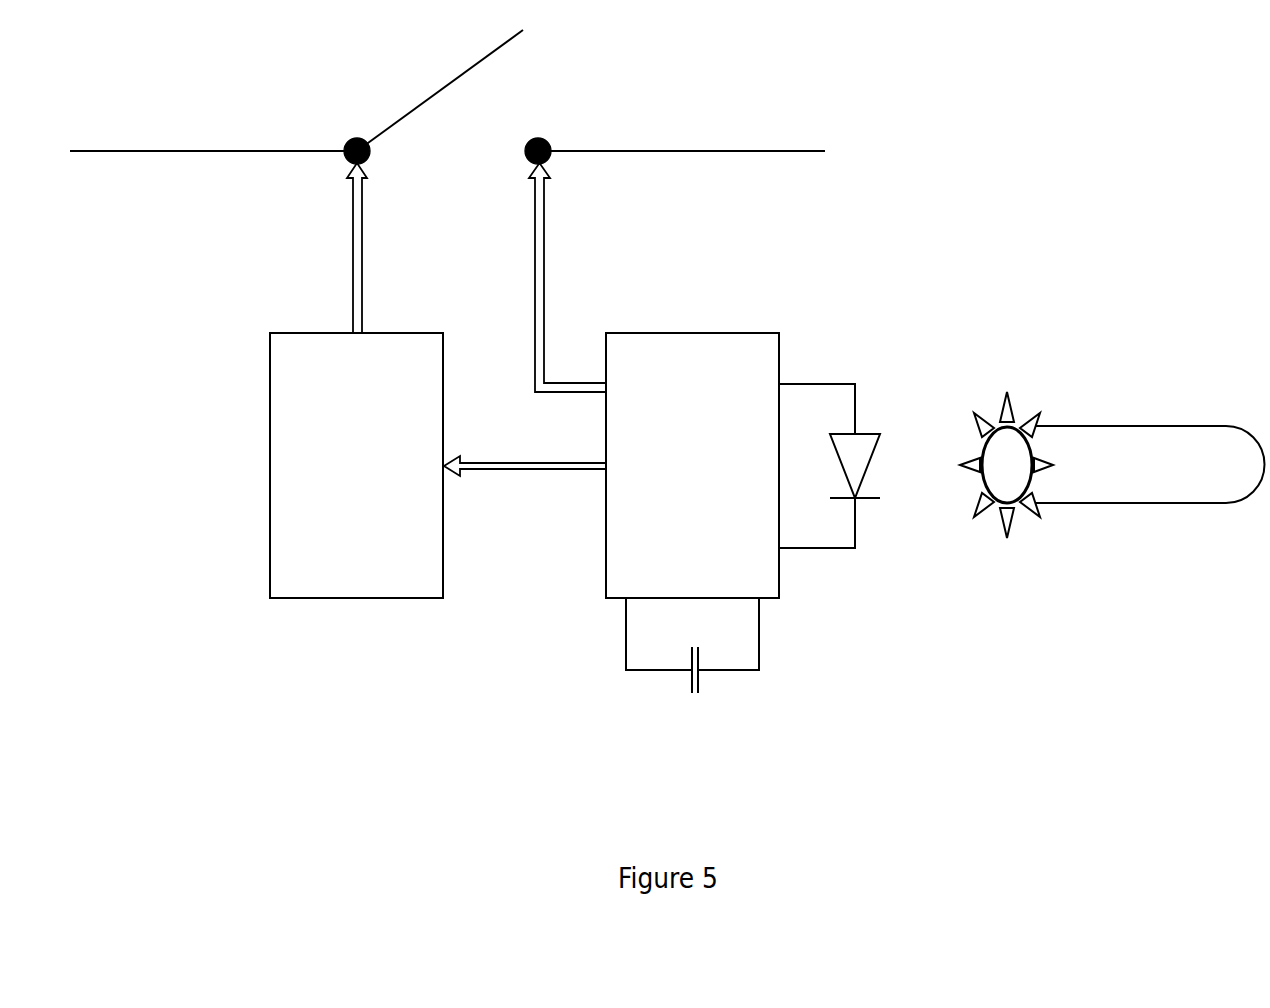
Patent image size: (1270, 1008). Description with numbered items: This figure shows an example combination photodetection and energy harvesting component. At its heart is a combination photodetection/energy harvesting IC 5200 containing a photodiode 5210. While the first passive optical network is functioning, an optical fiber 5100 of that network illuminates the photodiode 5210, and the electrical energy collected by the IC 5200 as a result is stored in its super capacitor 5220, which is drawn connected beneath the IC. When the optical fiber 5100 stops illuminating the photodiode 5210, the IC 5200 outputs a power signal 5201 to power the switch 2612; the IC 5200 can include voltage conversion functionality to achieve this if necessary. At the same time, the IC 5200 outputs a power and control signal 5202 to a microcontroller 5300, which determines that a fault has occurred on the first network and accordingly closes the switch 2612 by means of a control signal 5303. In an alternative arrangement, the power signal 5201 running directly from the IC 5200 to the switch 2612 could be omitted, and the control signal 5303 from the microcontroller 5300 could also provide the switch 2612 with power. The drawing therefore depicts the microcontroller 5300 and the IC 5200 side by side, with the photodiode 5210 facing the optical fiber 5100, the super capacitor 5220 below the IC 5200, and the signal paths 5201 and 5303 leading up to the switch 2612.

The switch 2612 is at (424, 95).
The control signal 5303 is at (350, 249).
The power signal 5201 is at (547, 258).
The microcontroller 5300 is at (356, 465).
The combination photodetection/energy harvesting IC 5200 is at (692, 465).
The power and control signal 5202 is at (485, 478).
The photodiode 5210 is at (872, 503).
The super capacitor 5220 is at (702, 681).
The optical fiber 5100 is at (1112, 465).